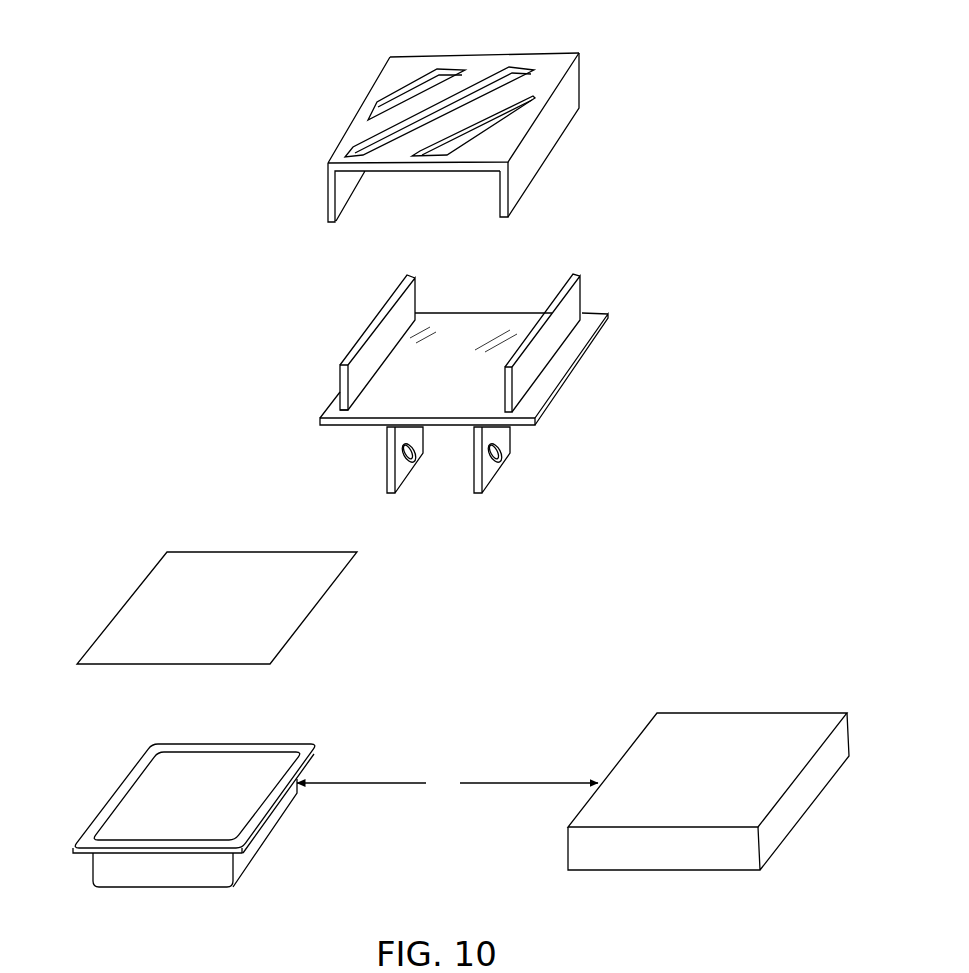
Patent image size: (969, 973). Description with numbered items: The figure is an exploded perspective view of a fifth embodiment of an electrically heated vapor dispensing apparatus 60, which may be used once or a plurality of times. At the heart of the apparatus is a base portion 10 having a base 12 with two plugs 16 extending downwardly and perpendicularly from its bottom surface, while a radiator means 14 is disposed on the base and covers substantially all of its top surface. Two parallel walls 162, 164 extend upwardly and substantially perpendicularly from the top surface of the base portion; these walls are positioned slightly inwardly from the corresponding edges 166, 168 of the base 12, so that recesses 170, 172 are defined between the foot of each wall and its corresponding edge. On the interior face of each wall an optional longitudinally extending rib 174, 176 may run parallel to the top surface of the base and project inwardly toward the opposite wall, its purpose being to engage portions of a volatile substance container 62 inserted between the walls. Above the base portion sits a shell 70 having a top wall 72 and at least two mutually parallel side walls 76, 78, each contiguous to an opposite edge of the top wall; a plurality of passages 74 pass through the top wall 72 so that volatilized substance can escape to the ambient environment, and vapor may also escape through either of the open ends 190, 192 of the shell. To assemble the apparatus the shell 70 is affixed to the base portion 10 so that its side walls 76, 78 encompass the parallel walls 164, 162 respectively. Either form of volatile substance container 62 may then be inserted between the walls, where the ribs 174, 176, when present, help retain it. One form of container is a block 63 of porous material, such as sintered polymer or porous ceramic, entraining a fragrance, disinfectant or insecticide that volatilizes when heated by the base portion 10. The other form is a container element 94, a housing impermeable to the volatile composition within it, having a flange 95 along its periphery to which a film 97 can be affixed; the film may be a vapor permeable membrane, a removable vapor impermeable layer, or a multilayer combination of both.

The base portion 10 is at (661, 377).
The base 12 is at (537, 423).
The radiator means 14 is at (470, 322).
The plugs 16 is at (405, 485).
The electrically heated vapor dispensing apparatus 60 is at (693, 55).
The volatile substance container 62 is at (153, 780).
The block 63 is at (603, 863).
The shell 70 is at (580, 162).
The top wall 72 is at (552, 60).
The passages 74 is at (378, 100).
The side wall 76 is at (565, 115).
The side wall 78 is at (343, 200).
The container element 94 is at (90, 872).
The flange 95 is at (308, 748).
The film 97 is at (303, 567).
The parallel wall 162 is at (338, 379).
The parallel wall 164 is at (577, 303).
The edge 166 is at (542, 374).
The edge 168 is at (320, 422).
The recess 170 is at (610, 316).
The recess 172 is at (334, 406).
The longitudinally extending rib 174 is at (417, 293).
The longitudinally extending rib 176 is at (547, 296).
The open end 190 is at (480, 220).
The open end 192 is at (458, 48).